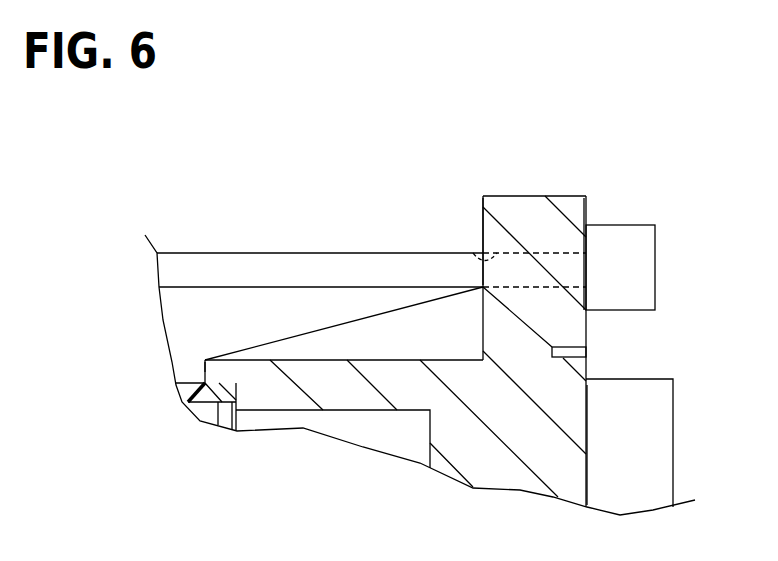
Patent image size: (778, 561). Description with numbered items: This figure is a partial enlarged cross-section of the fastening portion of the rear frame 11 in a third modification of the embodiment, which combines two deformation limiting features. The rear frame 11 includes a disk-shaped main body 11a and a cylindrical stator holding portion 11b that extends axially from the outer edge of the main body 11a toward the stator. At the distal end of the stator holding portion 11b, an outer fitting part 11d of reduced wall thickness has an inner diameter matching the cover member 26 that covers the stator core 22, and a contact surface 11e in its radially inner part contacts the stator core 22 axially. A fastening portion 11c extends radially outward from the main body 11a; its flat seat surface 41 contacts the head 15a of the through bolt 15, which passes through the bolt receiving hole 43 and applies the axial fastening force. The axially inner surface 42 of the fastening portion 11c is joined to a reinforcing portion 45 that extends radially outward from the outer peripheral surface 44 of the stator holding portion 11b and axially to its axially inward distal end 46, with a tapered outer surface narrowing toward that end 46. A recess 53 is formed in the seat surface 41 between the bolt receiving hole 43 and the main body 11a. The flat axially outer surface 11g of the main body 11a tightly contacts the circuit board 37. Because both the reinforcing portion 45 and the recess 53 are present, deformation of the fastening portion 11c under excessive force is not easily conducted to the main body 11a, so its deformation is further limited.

The rear frame 11 is at (648, 423).
The main body 11a is at (497, 478).
The stator holding portion 11b is at (352, 405).
The fastening portion 11c is at (508, 197).
The outer fitting part 11d is at (217, 367).
The contact surface 11e is at (217, 398).
The axially outer surface 11g is at (588, 474).
The through bolt 15 is at (328, 253).
The head 15a is at (640, 225).
The stator core 22 is at (240, 427).
The cover member 26 is at (182, 392).
The circuit board 37 is at (674, 433).
The seat surface 41 is at (588, 197).
The axially inner surface 42 is at (482, 198).
The bolt receiving hole 43 is at (476, 251).
The outer peripheral surface 44 is at (268, 360).
The reinforcing portion 45 is at (320, 333).
The axially inward distal end 46 is at (205, 372).
The recess 53 is at (586, 353).